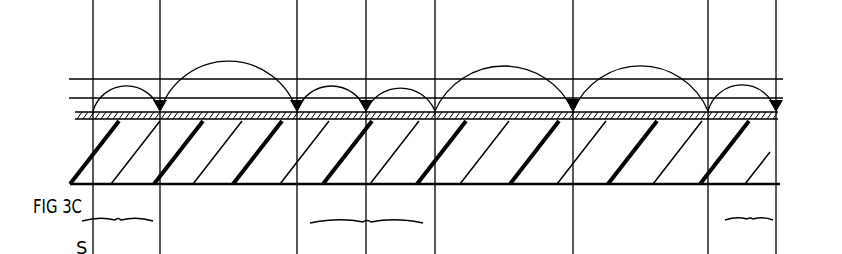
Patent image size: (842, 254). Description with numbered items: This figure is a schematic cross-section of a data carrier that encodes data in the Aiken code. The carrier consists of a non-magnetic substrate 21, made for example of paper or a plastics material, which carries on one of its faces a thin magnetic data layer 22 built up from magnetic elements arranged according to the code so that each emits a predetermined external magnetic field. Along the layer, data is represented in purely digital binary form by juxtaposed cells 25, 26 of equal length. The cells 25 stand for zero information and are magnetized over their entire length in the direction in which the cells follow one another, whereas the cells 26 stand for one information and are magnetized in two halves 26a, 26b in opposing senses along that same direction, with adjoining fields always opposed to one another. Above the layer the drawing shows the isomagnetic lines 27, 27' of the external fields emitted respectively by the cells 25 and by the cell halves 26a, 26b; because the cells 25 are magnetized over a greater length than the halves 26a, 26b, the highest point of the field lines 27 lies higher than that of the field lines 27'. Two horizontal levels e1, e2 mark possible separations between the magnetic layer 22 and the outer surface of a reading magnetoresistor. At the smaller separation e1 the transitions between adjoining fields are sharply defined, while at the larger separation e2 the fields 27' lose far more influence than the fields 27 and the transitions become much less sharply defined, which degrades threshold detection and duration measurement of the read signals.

The non-magnetic substrate 21 is at (94, 150).
The magnetic data layer 22 is at (73, 115).
The cells representing zero information 25 is at (225, 124).
The cells representing one information 26 is at (427, 235).
The first half of cell 26 26a is at (327, 124).
The second half of cell 26 26b is at (127, 124).
The isomagnetic lines of cells 25 27 is at (430, 70).
The isomagnetic lines of cell halves 26a, 26b 27' is at (438, 70).
The first separation value e1 is at (93, 111).
The second separation value e2 is at (426, 70).